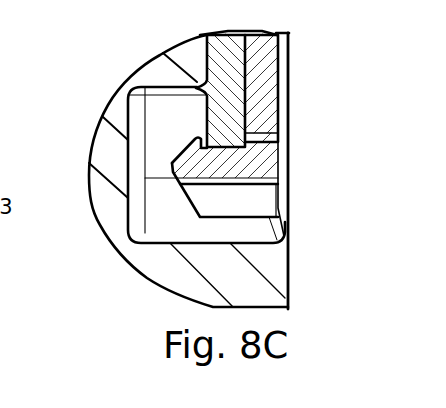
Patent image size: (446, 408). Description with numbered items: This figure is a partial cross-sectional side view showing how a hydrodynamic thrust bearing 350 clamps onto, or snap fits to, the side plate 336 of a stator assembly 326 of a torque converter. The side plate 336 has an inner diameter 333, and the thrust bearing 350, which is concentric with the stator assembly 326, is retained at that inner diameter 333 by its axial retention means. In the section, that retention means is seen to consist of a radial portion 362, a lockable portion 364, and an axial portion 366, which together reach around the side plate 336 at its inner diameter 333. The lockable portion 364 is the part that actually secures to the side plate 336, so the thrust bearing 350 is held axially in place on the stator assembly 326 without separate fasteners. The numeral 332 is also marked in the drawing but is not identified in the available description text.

The stator assembly 326 is at (345, 78).
The housing 332 is at (111, 163).
The inner diameter 333 is at (228, 152).
The side plate 336 is at (207, 52).
The hydrodynamic thrust bearing 350 is at (280, 55).
The radial portion 362 is at (262, 112).
The lockable portion 364 is at (173, 160).
The axial portion 366 is at (250, 174).